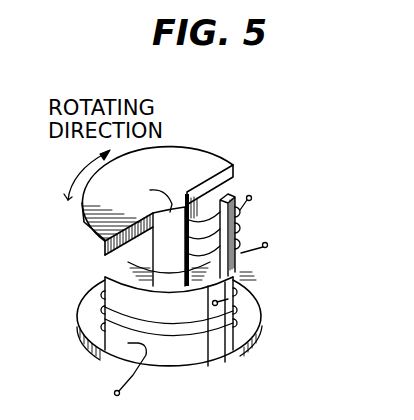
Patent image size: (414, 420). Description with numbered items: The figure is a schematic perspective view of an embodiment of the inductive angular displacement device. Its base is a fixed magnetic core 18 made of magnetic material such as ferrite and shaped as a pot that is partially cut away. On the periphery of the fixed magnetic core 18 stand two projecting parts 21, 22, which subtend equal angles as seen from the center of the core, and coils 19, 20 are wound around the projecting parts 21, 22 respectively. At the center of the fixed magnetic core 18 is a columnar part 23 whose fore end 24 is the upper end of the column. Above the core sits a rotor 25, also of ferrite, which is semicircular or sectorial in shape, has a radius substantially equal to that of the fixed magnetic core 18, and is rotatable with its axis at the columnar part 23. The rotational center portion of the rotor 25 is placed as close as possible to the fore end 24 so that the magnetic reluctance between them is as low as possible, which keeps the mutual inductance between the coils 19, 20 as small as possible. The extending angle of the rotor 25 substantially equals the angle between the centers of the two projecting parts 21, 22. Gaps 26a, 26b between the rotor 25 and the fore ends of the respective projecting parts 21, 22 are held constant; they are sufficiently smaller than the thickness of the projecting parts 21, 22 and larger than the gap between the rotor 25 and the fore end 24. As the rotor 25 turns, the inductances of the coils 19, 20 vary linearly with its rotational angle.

The fixed magnetic core 18 is at (255, 300).
The coil 19 is at (128, 343).
The coil 20 is at (247, 212).
The projecting part 21 is at (192, 342).
The projecting part 22 is at (236, 230).
The columnar part 23 is at (181, 262).
The fore end of the columnar part 24 is at (172, 206).
The rotor 25 is at (216, 161).
The gap 26a is at (102, 258).
The gap 26b is at (230, 192).